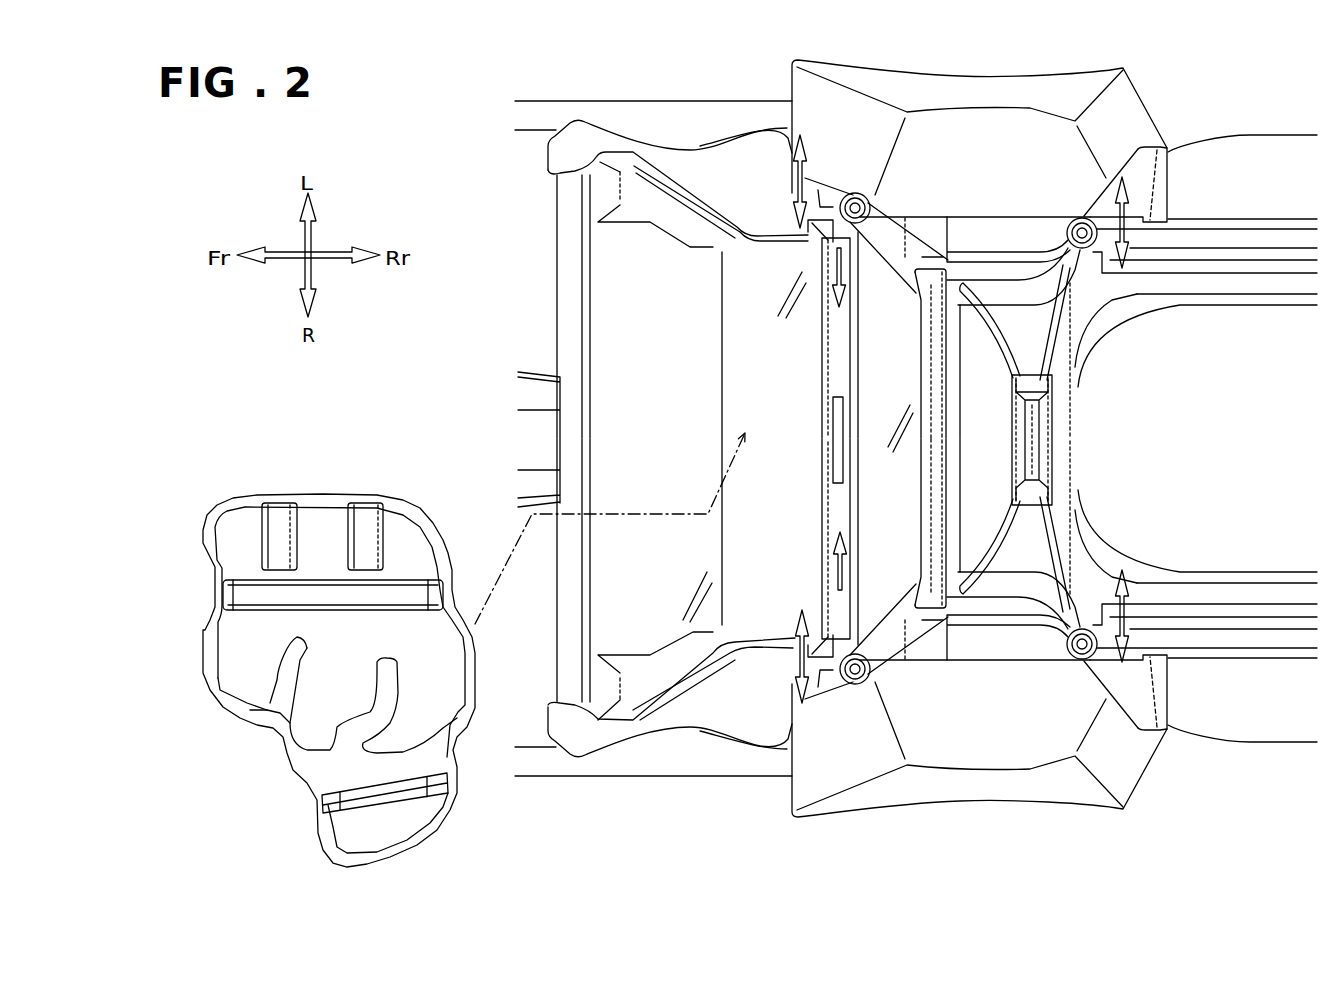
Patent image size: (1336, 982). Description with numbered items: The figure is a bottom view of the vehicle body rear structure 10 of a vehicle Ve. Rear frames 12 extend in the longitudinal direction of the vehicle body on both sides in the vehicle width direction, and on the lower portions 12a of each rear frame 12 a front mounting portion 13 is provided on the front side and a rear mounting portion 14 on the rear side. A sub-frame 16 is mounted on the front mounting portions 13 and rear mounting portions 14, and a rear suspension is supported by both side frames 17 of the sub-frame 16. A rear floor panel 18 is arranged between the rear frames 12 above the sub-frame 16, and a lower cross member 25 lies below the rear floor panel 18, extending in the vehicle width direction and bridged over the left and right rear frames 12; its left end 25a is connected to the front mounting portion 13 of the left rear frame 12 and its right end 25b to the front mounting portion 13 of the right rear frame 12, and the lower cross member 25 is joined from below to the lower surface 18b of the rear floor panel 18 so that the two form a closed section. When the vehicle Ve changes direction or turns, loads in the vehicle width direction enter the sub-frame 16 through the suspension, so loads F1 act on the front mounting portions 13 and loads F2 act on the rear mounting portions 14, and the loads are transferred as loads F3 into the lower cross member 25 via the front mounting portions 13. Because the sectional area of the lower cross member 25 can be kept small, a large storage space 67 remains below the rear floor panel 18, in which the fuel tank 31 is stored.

The vehicle body rear structure 10 is at (545, 213).
The rear frame 12 is at (1002, 217).
The lower portion 12a is at (973, 228).
The front mounting portion 13 is at (852, 192).
The rear mounting portion 14 is at (1100, 247).
The sub-frame 16 is at (1054, 410).
The side frame 17 is at (888, 226).
The rear floor panel 18 is at (992, 438).
The lower surface 18b is at (740, 401).
The lower cross member 25 is at (824, 370).
The left end 25a is at (808, 232).
The right end 25b is at (812, 647).
The fuel tank 31 is at (327, 517).
The storage space 67 is at (795, 467).
The vehicle Ve is at (540, 117).
The load F1 is at (797, 182).
The load F2 is at (1126, 214).
The load F3 is at (846, 270).